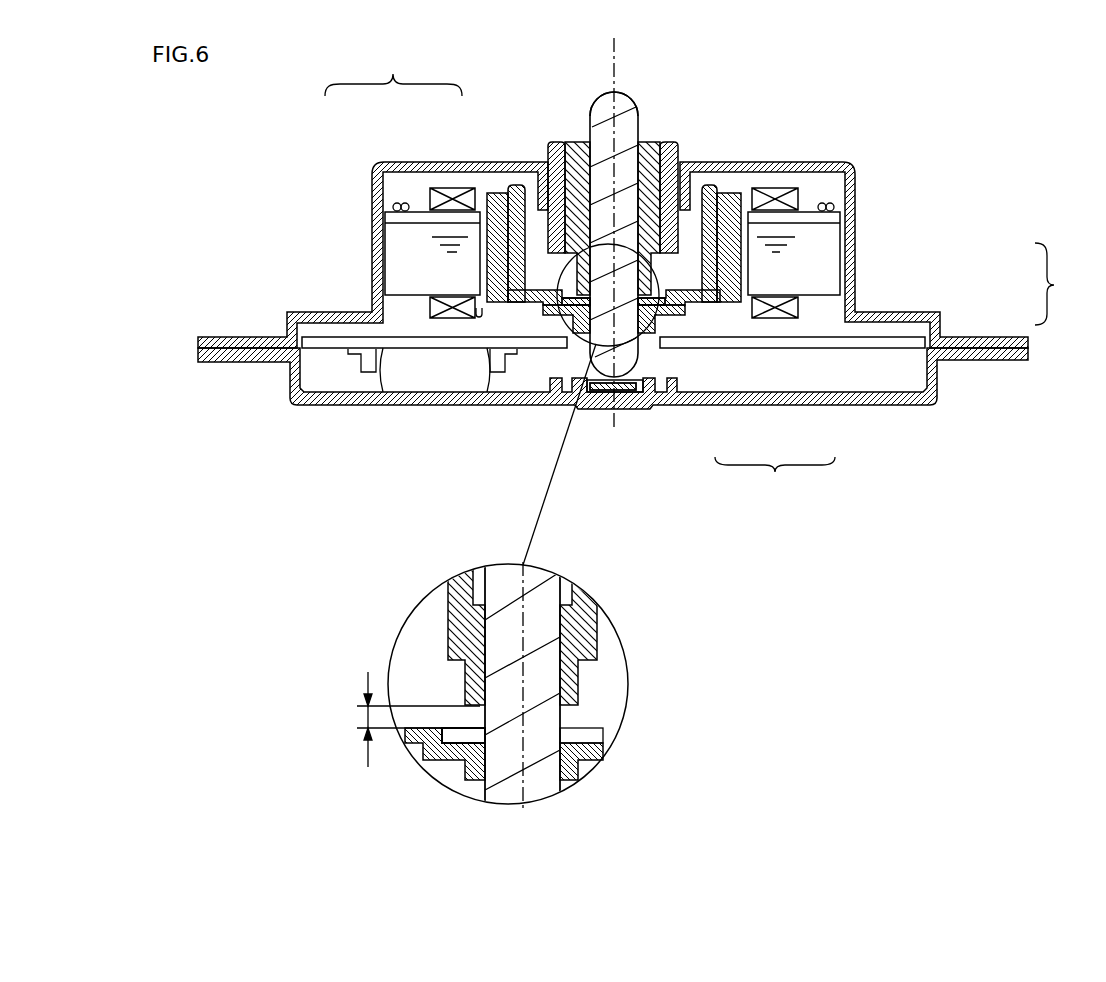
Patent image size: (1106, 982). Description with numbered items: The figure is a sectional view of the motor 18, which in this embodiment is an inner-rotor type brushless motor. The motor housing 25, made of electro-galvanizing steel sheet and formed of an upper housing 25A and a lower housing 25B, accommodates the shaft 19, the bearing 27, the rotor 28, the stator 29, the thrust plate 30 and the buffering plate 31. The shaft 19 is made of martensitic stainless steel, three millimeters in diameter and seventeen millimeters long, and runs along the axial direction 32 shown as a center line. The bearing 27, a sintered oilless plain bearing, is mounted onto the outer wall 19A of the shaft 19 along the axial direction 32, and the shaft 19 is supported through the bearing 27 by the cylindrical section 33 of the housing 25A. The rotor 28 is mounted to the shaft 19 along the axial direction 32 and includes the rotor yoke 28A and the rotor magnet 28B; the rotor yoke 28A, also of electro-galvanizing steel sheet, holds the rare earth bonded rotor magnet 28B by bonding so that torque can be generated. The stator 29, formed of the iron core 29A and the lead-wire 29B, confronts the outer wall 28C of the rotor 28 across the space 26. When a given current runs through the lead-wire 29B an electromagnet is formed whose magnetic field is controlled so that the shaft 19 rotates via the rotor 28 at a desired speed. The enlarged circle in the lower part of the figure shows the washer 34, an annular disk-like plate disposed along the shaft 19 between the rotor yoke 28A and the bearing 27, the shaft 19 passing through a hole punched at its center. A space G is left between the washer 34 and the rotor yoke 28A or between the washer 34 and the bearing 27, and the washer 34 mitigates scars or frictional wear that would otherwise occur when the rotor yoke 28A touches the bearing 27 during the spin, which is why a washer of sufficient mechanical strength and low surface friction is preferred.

The motor 18 is at (615, 389).
The shaft 19 is at (534, 420).
The outer wall of shaft 19A is at (588, 135).
The motor housing 25 is at (1057, 284).
The housing 25A is at (928, 312).
The housing 25B is at (1003, 348).
The space 26 is at (479, 318).
The bearing 27 is at (548, 140).
The rotor 28 is at (613, 441).
The rotor yoke 28A is at (710, 300).
The rotor magnet 28B is at (733, 290).
The outer wall of rotor 28C is at (743, 213).
The stator 29 is at (633, 180).
The iron core 29A is at (403, 250).
The lead-wire 29B is at (470, 200).
The thrust plate 30 is at (627, 393).
The buffering plate 31 is at (602, 405).
The axial direction 32 is at (615, 70).
The cylindrical section 33 is at (540, 170).
The washer 34 is at (553, 297).
The space G is at (409, 719).